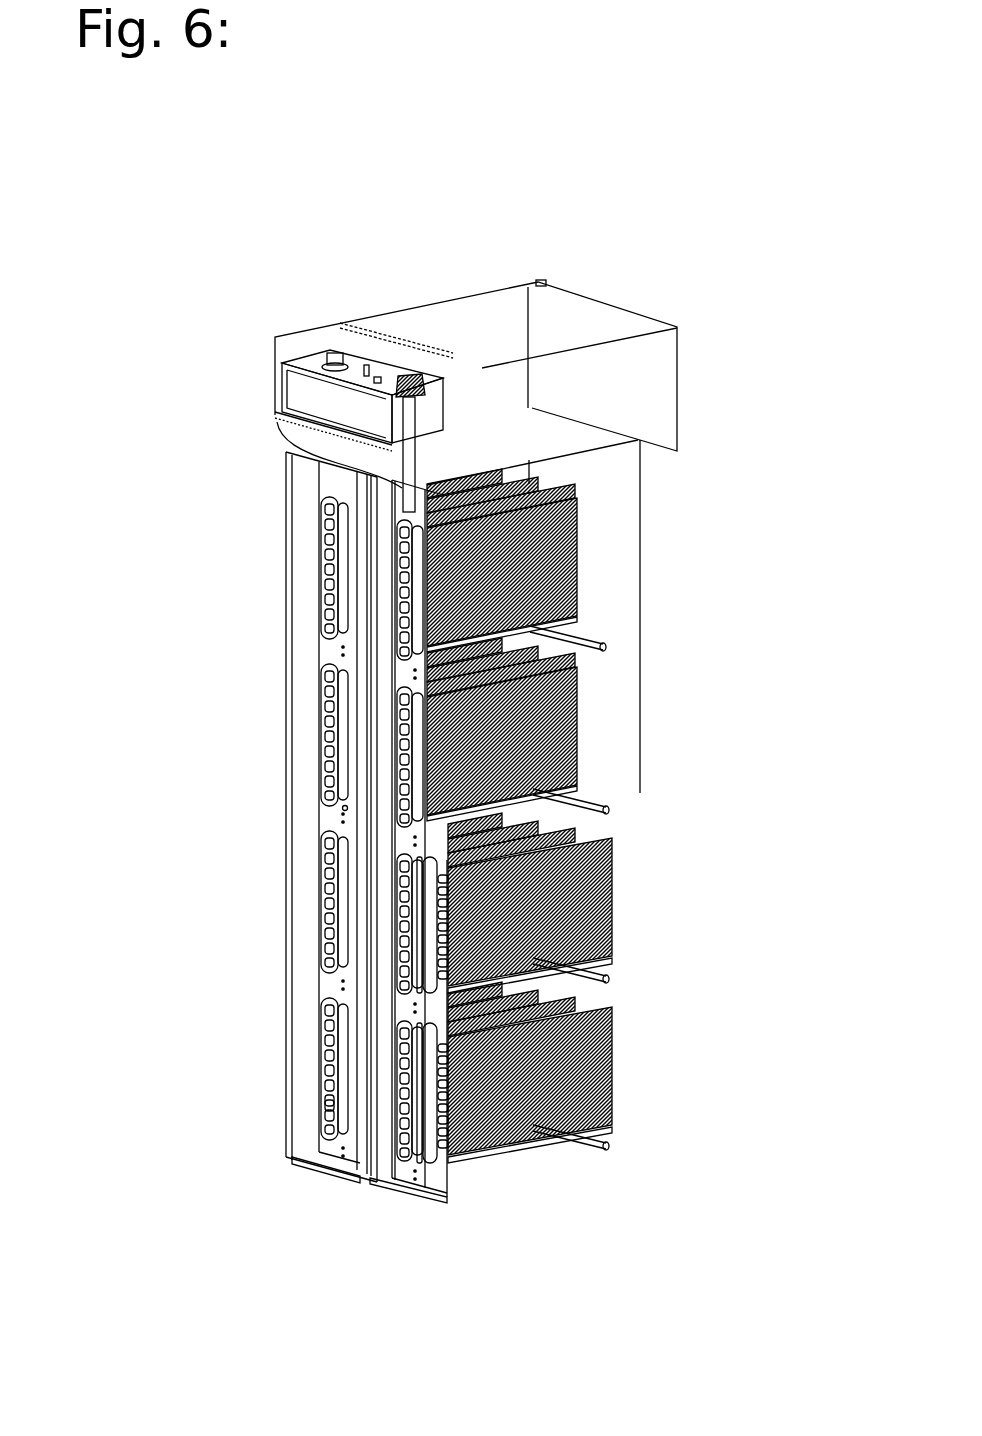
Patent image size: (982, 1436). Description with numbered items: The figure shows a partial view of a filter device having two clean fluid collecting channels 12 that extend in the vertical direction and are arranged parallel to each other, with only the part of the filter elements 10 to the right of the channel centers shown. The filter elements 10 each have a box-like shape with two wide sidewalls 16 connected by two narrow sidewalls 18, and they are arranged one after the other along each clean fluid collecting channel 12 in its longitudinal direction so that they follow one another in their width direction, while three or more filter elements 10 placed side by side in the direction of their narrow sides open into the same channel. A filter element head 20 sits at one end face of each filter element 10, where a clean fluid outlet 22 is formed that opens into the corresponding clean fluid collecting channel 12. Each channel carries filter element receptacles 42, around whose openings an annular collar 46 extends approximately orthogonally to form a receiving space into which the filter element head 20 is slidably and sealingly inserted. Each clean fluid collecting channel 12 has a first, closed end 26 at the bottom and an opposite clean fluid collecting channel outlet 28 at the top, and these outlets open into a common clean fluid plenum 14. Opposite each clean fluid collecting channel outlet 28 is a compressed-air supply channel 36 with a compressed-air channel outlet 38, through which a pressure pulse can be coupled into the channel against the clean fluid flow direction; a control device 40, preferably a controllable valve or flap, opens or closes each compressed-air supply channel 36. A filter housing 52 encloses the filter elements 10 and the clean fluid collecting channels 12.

The filter element 10 is at (606, 860).
The clean fluid collecting channel 12 is at (309, 880).
The clean fluid plenum 14 is at (632, 388).
The wide sidewall 16 is at (607, 1058).
The narrow sidewall 18 is at (602, 1003).
The filter element head 20 is at (327, 1125).
The clean fluid outlet 22 is at (330, 1102).
The first, closed end 26 is at (315, 1167).
The clean fluid collecting channel outlet 28 is at (333, 457).
The compressed-air supply channel 36 is at (408, 420).
The compressed-air channel outlet 38 is at (408, 447).
The control device 40 is at (330, 353).
The filter element receptacle 42 is at (406, 709).
The annular collar 46 is at (346, 808).
The filter housing 52 is at (662, 884).